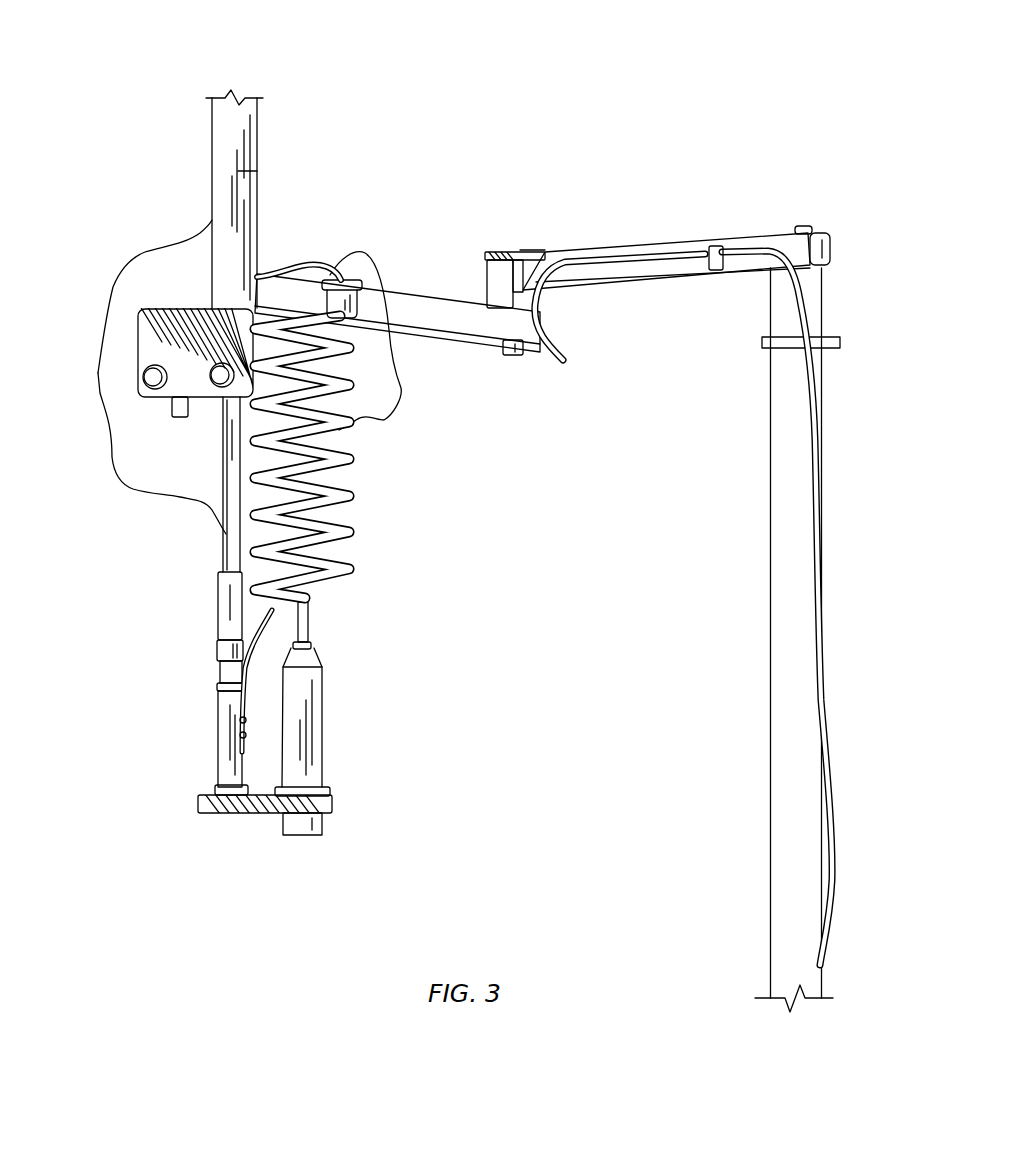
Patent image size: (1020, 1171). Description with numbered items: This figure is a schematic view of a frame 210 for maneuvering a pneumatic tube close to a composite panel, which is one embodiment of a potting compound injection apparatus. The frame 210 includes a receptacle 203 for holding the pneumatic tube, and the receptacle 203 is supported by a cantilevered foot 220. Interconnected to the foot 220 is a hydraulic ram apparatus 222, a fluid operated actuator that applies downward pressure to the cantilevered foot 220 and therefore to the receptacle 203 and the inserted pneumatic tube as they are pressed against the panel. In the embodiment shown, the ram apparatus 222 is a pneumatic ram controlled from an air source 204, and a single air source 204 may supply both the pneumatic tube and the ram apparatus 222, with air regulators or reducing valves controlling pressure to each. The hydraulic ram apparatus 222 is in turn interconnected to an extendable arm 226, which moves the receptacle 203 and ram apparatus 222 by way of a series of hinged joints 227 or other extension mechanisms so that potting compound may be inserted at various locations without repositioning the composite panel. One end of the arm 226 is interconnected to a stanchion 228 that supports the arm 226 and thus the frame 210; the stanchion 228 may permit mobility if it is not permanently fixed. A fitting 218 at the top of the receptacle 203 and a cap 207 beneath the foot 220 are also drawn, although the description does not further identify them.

The receptacle 203 is at (312, 728).
The air source 204 is at (348, 431).
The cap 207 is at (310, 822).
The frame 210 is at (537, 110).
The fitting 218 is at (313, 648).
The cantilevered foot 220 is at (240, 805).
The hydraulic ram apparatus 222 is at (86, 386).
The extendable arm 226 is at (670, 270).
The hinged joints 227 is at (480, 320).
The stanchion 228 is at (768, 615).